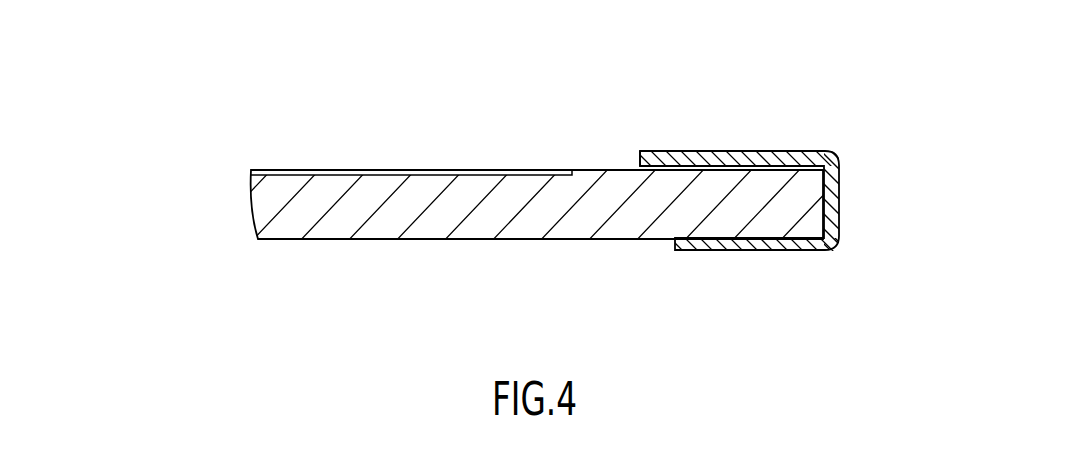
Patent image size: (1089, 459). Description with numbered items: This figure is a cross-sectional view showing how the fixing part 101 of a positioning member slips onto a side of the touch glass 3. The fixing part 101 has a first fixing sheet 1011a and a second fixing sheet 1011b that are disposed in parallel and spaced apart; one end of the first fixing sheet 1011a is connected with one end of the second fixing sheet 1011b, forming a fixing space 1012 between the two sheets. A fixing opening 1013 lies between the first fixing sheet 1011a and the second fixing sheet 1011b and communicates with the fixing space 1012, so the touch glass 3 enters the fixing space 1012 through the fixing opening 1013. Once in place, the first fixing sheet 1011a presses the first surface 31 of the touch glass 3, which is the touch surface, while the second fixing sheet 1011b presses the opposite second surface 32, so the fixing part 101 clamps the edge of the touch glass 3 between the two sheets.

The touch glass 3 is at (268, 205).
The first surface 31 is at (590, 169).
The second surface 32 is at (537, 239).
The fixing part 101 is at (848, 150).
The first fixing sheet 1011a is at (772, 151).
The second fixing sheet 1011b is at (775, 252).
The fixing space 1012 is at (822, 176).
The fixing opening 1013 is at (638, 164).